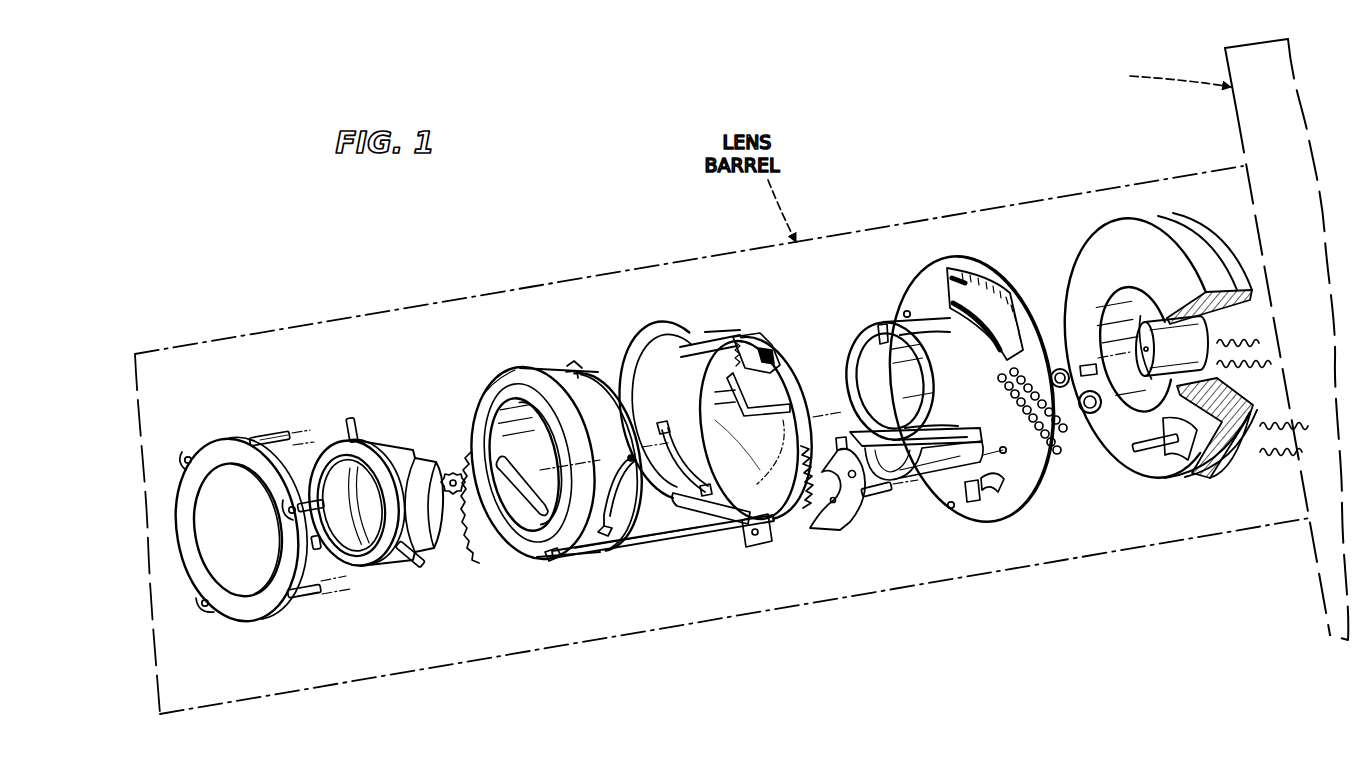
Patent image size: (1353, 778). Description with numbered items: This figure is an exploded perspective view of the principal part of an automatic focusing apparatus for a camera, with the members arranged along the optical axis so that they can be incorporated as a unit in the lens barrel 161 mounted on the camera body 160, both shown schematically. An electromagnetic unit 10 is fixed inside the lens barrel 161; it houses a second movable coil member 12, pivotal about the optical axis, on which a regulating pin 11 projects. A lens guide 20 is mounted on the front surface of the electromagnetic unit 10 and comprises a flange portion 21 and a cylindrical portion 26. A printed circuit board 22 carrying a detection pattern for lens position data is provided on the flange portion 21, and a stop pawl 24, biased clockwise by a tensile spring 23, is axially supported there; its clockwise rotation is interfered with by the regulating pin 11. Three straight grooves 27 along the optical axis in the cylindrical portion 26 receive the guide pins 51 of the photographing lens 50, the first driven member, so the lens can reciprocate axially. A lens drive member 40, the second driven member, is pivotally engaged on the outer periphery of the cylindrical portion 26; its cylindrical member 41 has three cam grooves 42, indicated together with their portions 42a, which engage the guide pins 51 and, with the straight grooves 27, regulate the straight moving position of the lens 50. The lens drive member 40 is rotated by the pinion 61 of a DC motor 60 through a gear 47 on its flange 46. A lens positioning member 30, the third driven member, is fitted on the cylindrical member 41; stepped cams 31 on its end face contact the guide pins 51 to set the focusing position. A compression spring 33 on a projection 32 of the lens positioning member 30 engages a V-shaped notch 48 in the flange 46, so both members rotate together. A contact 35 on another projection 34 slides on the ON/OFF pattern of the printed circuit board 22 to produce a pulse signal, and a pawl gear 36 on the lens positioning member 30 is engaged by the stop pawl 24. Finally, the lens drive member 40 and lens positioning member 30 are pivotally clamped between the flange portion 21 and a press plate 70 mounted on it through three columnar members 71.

The electromagnetic unit 10 is at (1131, 214).
The regulating pin 11 is at (880, 497).
The second movable coil member 12 is at (1212, 474).
The lens guide 20 is at (958, 256).
The flange portion 21 is at (1020, 492).
The printed circuit board 22 is at (990, 284).
The tensile spring 23 is at (840, 457).
The stop pawl 24 is at (840, 530).
The cylindrical portion 26 is at (855, 345).
The straight grooves 27 is at (882, 326).
The lens positioning member 30 is at (702, 328).
The stepped cams 31 is at (742, 458).
The projection 32 is at (764, 548).
The compression spring 33 is at (617, 556).
The another projection 34 is at (776, 352).
The contact 35 is at (752, 336).
The pawl gear 36 is at (803, 512).
The lens drive member 40 is at (523, 368).
The cylindrical member 41 is at (570, 366).
The cam grooves 42 is at (616, 460).
The spring end 42a is at (638, 452).
The flange 46 is at (496, 380).
The gear 47 is at (476, 543).
The V-shaped notch 48 is at (540, 562).
The photographing lens 50 is at (376, 440).
The guide pins 51 is at (350, 420).
The DC motor 60 is at (1200, 334).
The pinion 61 is at (449, 474).
The press plate 70 is at (232, 430).
The columnar members 71 is at (268, 438).
The camera body 160 is at (1238, 139).
The lens barrel portion 161 is at (886, 232).